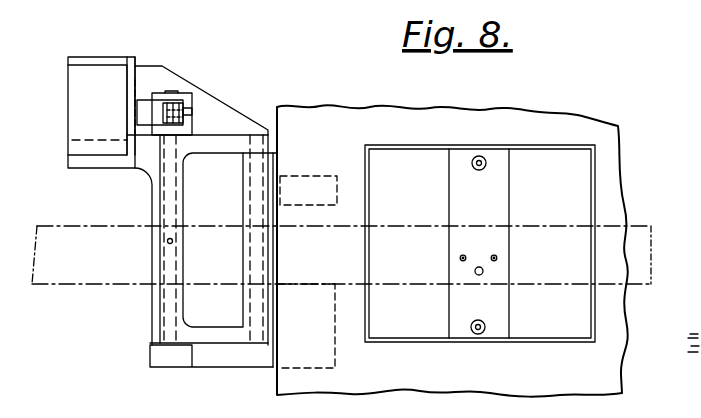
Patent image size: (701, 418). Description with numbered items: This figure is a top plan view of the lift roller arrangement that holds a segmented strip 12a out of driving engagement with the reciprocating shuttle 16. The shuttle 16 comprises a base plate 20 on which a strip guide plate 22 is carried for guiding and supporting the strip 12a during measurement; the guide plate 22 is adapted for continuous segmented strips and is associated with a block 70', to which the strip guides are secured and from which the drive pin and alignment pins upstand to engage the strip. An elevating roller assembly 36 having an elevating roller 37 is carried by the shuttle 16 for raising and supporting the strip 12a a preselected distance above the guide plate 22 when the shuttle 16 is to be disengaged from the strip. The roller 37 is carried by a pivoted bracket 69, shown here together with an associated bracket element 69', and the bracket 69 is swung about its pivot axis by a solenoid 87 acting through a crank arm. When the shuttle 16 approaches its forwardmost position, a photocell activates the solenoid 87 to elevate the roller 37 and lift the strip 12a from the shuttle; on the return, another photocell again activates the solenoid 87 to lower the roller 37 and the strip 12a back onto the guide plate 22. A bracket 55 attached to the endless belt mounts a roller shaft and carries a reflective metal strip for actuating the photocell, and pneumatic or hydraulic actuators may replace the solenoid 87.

The segmented strip 12a is at (53, 225).
The reciprocating shuttle 16 is at (585, 121).
The base plate 20 is at (618, 130).
The strip guide plate 22 is at (583, 167).
The elevating roller assembly 36 is at (238, 97).
The elevating roller 37 is at (243, 300).
The bracket 55 is at (675, 322).
The pivoted bracket 69 is at (211, 370).
The fastener 69' is at (187, 88).
The block 70' is at (474, 204).
The solenoid 87 is at (68, 89).